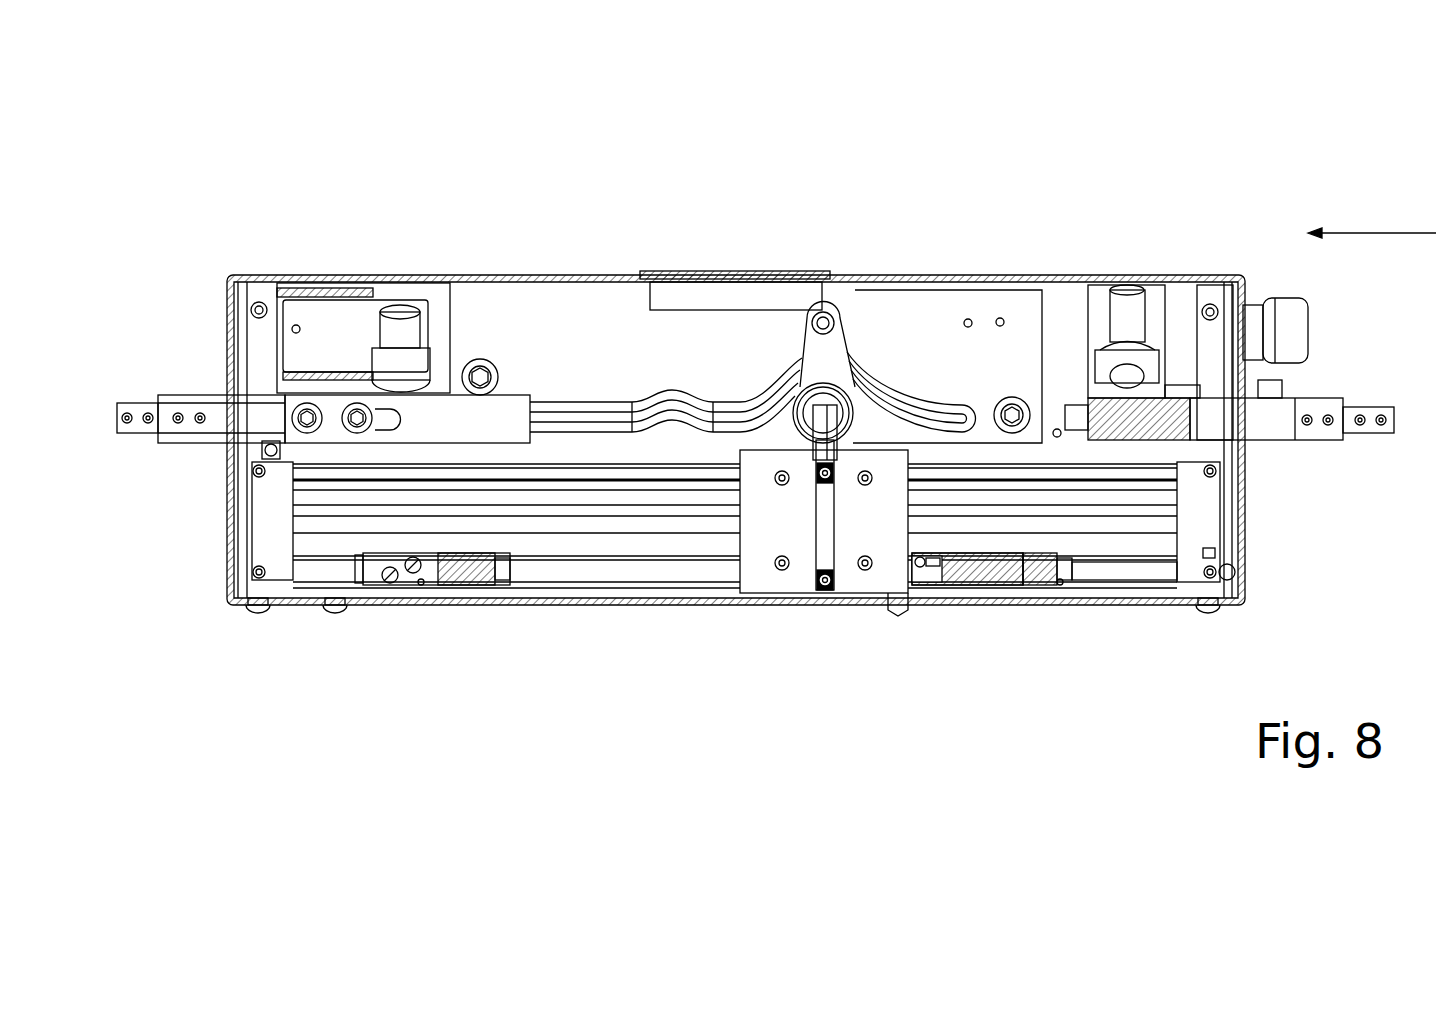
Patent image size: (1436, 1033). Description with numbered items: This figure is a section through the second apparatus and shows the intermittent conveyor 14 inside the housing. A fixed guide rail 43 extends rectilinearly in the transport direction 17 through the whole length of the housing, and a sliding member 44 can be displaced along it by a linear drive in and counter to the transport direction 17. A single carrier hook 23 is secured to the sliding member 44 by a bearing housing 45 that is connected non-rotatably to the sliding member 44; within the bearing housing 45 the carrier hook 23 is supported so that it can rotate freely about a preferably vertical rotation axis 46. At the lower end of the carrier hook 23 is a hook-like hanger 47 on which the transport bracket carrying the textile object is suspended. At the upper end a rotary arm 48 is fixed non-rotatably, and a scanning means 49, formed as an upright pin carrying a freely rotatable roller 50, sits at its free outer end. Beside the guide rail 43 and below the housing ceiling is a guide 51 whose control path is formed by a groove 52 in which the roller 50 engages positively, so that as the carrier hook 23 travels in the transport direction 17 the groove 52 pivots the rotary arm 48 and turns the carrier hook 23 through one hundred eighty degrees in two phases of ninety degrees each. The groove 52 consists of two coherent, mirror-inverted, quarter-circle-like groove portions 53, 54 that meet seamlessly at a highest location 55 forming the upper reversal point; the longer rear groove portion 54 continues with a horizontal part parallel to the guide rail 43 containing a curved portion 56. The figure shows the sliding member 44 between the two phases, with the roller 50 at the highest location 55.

The intermittent conveyor 14 is at (310, 519).
The transport direction 17 is at (1396, 233).
The carrier hook 23 is at (763, 595).
The hanger 47 is at (818, 447).
The guide rail 43 is at (598, 525).
The sliding member 44 is at (850, 577).
The bearing housing 45 is at (845, 440).
The rotation axis 46 is at (710, 595).
The rotary arm 48 is at (932, 393).
The scanning means 49 is at (898, 251).
The roller 50 is at (836, 321).
The guide 51 is at (550, 312).
The groove 52 is at (875, 278).
The initial groove portion 53 is at (833, 360).
The rear groove portion 54 is at (636, 370).
The highest location 55 is at (843, 296).
The curved portion 56 is at (665, 370).